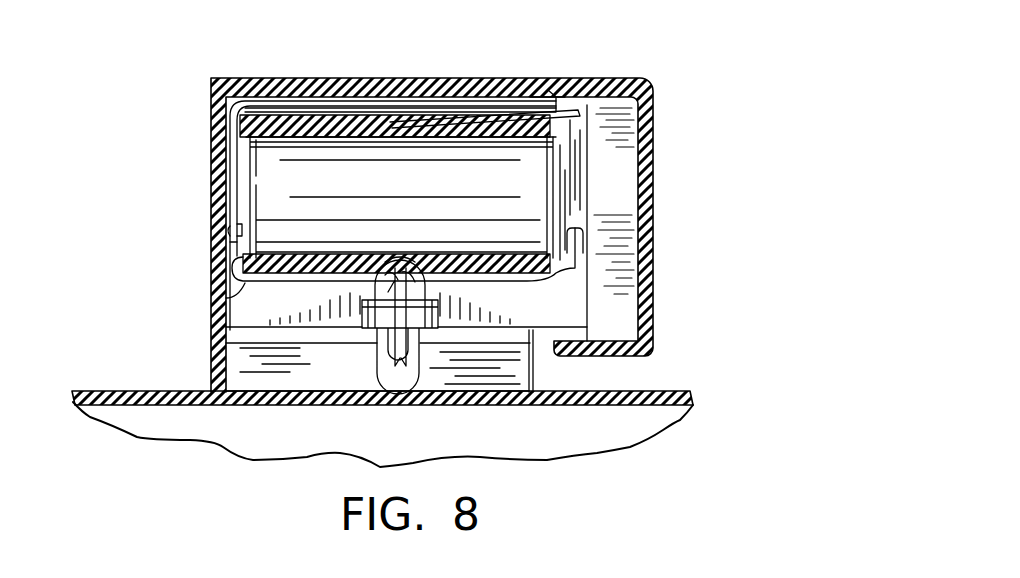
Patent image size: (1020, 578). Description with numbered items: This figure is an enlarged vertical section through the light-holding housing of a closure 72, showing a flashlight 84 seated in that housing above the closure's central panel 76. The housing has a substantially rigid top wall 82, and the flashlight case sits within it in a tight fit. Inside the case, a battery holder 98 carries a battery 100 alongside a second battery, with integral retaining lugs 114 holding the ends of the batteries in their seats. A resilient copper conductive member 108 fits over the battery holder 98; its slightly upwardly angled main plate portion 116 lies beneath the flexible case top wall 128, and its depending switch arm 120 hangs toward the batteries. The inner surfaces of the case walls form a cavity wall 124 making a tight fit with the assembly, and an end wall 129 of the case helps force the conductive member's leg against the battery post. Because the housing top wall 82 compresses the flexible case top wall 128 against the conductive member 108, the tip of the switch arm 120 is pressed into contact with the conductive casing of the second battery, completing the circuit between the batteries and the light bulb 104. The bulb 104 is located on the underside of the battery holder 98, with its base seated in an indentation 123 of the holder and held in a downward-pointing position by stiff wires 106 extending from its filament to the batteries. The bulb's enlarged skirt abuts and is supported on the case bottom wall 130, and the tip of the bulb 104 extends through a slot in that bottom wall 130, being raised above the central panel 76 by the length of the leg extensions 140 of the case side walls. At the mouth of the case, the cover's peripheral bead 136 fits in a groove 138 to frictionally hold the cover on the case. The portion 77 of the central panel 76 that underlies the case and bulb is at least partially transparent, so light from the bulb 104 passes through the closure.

The closure 72 is at (126, 441).
The central panel 76 is at (672, 426).
The portion of central panel 77 is at (462, 396).
The top wall 82 is at (260, 85).
The flashlight 84 is at (648, 136).
The battery holder 98 is at (293, 139).
The battery 100 is at (427, 186).
The light bulb 104 is at (398, 394).
The wires 106 is at (220, 297).
The conductive member 108 is at (228, 107).
The retaining lugs 114 is at (584, 246).
The main plate portion 116 is at (325, 107).
The switch arm 120 is at (449, 110).
The indentation 123 is at (403, 262).
The cavity wall 124 is at (222, 146).
The top wall 128 is at (362, 98).
The end wall 129 is at (218, 260).
The bottom wall 130 is at (297, 352).
The peripheral bead 136 is at (570, 92).
The groove 138 is at (548, 88).
The leg extensions 140 is at (534, 368).